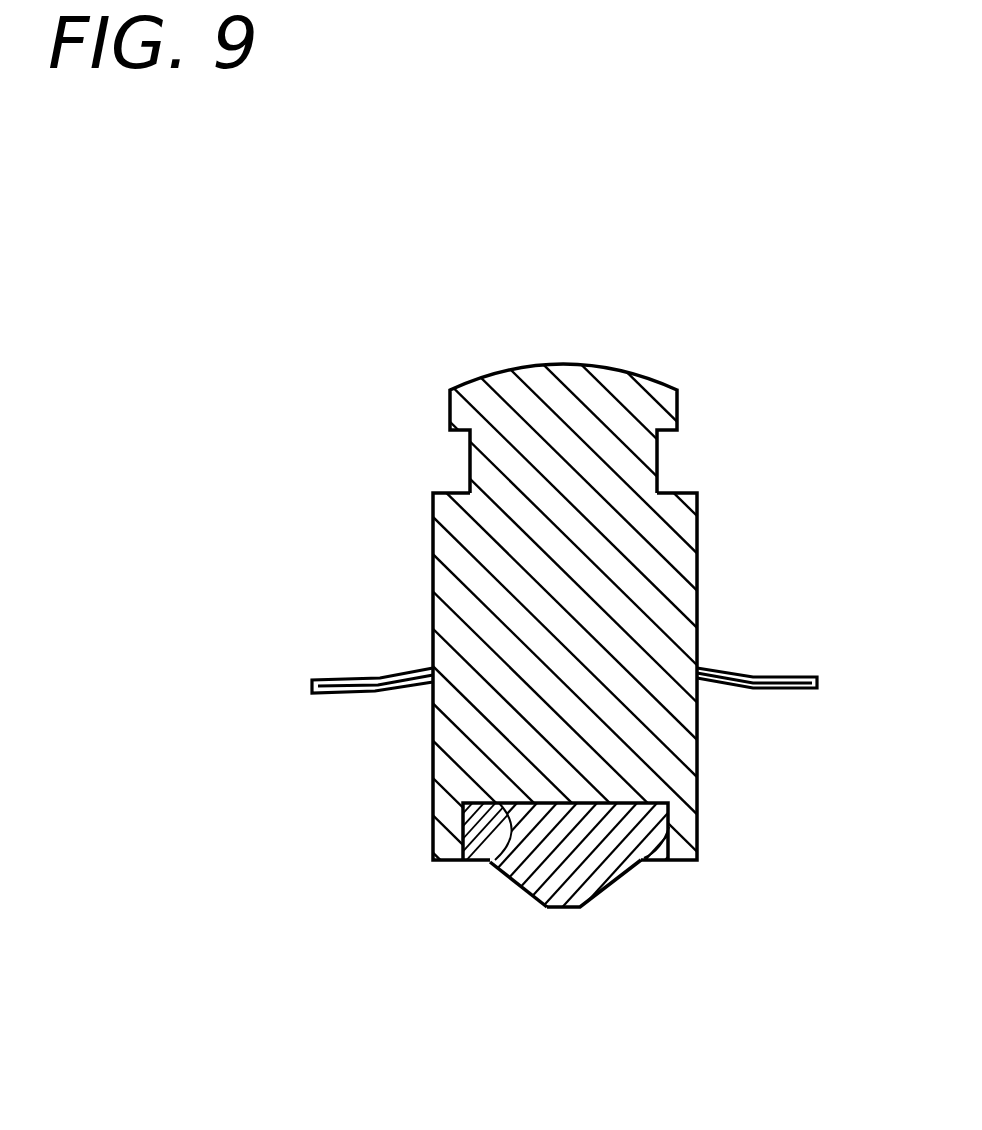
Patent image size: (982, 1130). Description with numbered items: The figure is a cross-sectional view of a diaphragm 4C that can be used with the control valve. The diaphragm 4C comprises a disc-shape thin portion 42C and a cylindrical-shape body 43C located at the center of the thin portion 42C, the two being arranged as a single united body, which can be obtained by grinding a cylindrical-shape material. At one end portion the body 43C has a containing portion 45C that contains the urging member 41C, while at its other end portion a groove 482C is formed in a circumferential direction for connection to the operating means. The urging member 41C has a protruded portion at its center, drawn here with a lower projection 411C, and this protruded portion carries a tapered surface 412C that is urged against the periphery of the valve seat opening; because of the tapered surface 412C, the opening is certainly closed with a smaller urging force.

The diaphragm 4C is at (787, 677).
The urging member 41C is at (668, 826).
The projecting portion 411C is at (646, 862).
The tapered surface 412C is at (520, 886).
The thin portion 42C is at (353, 693).
The body 43C is at (697, 562).
The containing portion 45C is at (494, 866).
The groove 482C is at (660, 460).